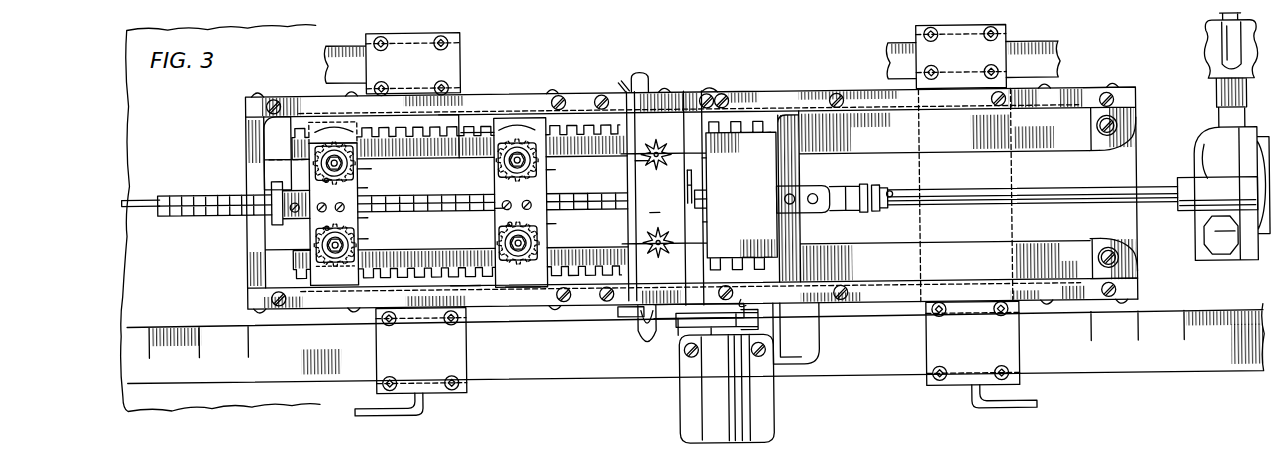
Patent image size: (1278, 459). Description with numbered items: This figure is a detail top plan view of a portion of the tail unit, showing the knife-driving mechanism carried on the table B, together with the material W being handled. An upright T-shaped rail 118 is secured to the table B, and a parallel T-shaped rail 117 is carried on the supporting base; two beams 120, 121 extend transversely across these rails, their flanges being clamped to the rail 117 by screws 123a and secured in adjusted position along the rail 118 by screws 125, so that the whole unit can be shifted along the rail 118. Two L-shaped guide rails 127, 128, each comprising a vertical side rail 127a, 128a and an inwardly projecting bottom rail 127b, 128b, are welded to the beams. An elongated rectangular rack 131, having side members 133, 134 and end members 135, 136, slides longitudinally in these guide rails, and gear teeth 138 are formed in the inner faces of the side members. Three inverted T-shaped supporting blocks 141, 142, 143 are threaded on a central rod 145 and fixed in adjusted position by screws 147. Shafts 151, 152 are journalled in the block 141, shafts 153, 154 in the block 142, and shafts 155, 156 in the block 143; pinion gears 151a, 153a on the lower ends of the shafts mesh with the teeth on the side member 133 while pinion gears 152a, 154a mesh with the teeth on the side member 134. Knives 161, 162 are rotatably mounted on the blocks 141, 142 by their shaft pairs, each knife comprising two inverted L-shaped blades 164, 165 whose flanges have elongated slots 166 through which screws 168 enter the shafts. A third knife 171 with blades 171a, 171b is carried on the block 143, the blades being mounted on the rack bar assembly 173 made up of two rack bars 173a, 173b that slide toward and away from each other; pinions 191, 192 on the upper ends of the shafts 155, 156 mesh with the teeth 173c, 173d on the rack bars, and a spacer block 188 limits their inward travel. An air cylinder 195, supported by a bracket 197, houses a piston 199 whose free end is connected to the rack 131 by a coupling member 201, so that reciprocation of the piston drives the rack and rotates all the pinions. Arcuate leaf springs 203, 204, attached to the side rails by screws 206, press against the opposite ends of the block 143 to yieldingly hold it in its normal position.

The table B is at (189, 409).
The web / work W is at (144, 192).
The T-shaped rail 117 is at (1058, 48).
The T-shaped rail 118 is at (1163, 353).
The beam 120 is at (380, 381).
The beam 121 is at (924, 380).
The screws 123a is at (440, 82).
The screws 125 is at (404, 414).
The guide rail 127 is at (1080, 300).
The side rail 127a is at (1098, 300).
The bottom rail 127b is at (1128, 263).
The guide rail 128 is at (1067, 100).
The side rail 128a is at (1092, 100).
The bottom rail 128b is at (1132, 130).
The rack 131 is at (470, 135).
The side member 133 is at (466, 300).
The side member 134 is at (452, 120).
The end member 135 is at (277, 134).
The end member 136 is at (790, 176).
The gear teeth 138 is at (428, 140).
The supporting block 141 is at (312, 130).
The supporting block 142 is at (527, 120).
The supporting block 143 is at (650, 186).
The rod 145 is at (192, 208).
The screws 147 is at (362, 214).
The shaft 151 is at (320, 258).
The pinion gear 151a is at (332, 284).
The shaft 152 is at (328, 138).
The pinion gear 152a is at (362, 168).
The shaft 153 is at (527, 285).
The pinion gear 153a is at (547, 234).
The shaft 154 is at (520, 128).
The pinion gear 154a is at (546, 150).
The shaft 155 is at (646, 343).
The shaft 156 is at (672, 150).
The knife 161 is at (335, 128).
The knife 162 is at (518, 287).
The blade 164 is at (362, 235).
The blade 165 is at (362, 185).
The slots 166 is at (325, 177).
The screws 168 is at (330, 158).
The knife 171 is at (655, 140).
The blade 171a is at (630, 236).
The blade 171b is at (630, 165).
The rack block 173 is at (706, 196).
The rack bar 173a is at (665, 300).
The rack bar 173b is at (708, 160).
The teeth 173c is at (712, 224).
The teeth 173d is at (693, 172).
The spacer block 188 is at (700, 197).
The pinion 191 is at (702, 204).
The pinion 192 is at (668, 150).
The air cylinder 195 is at (1248, 186).
The bracket 197 is at (1247, 188).
The piston 199 is at (1122, 204).
The coupling member 201 is at (862, 190).
The leaf spring 203 is at (748, 306).
The leaf spring 204 is at (730, 93).
The screws 206 is at (712, 95).